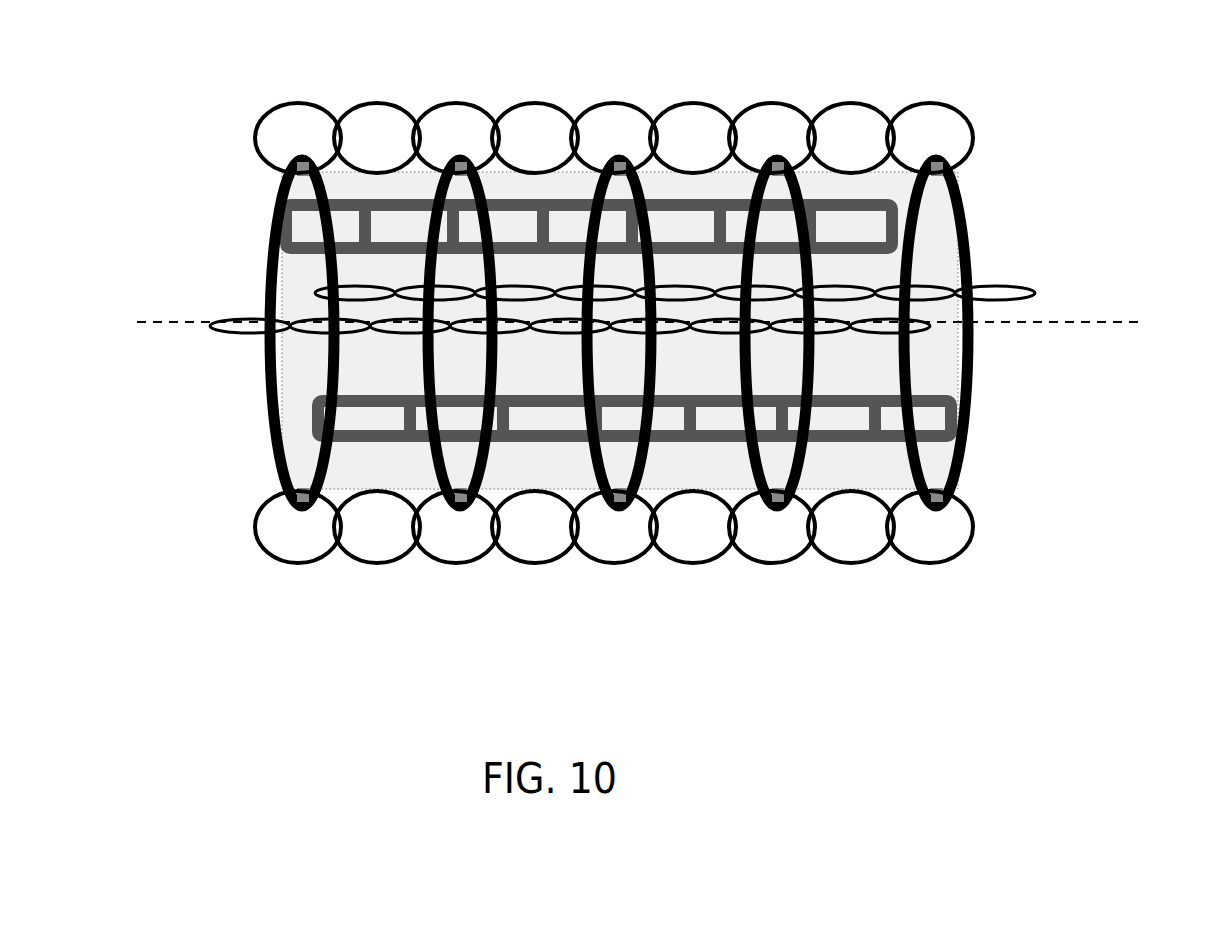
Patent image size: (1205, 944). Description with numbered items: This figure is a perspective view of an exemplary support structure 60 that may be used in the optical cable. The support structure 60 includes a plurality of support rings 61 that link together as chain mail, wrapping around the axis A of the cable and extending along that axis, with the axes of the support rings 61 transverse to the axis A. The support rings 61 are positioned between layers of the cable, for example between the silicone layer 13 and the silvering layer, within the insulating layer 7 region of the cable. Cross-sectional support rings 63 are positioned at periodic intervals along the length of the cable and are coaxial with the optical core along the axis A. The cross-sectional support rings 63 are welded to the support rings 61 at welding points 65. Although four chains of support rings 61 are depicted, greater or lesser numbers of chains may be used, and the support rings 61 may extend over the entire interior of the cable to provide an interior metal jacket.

The support structure 60 is at (652, 291).
The support rings 61 is at (972, 138).
The welding points 65 is at (960, 170).
The cross-sectional support rings 63 is at (977, 355).
The insulating layer 7 is at (923, 380).
The silicone layer 13 is at (300, 253).
The axis A is at (1117, 292).